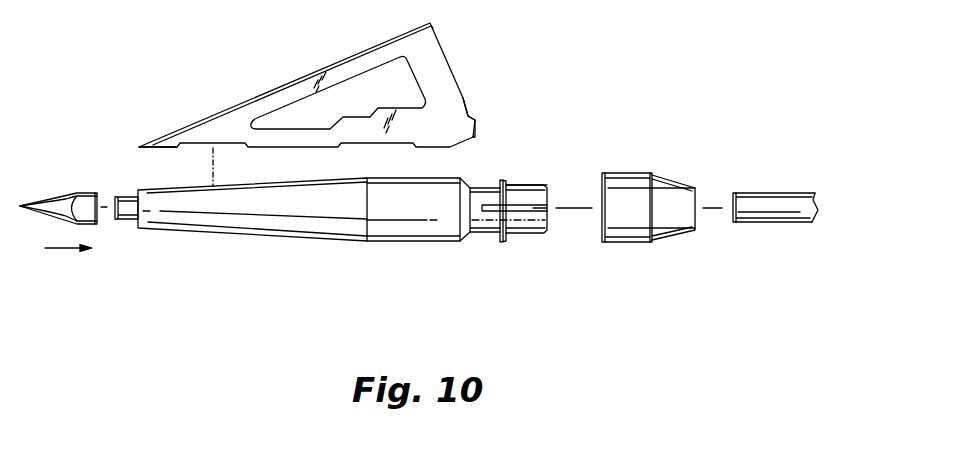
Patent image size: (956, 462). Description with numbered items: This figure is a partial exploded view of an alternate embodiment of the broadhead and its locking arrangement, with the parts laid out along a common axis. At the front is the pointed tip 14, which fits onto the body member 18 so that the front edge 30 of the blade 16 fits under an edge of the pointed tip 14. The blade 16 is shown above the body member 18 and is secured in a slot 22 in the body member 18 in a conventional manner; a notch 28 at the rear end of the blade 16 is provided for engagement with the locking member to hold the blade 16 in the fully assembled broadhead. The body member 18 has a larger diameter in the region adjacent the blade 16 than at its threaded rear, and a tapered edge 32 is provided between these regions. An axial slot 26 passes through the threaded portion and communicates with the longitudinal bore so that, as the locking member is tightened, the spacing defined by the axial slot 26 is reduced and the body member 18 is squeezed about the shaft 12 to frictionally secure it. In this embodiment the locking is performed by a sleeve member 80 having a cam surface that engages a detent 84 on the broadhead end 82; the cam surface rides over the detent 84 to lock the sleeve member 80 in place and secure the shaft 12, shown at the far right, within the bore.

The shaft 12 is at (753, 200).
The pointed tip 14 is at (75, 192).
The blade 16 is at (347, 67).
The body member 18 is at (245, 237).
The slot 22 is at (408, 240).
The axial slot 26 is at (533, 243).
The notch 28 is at (477, 121).
The front edge 30 is at (140, 146).
The tapered edge 32 is at (470, 186).
The sleeve member 80 is at (645, 175).
The broadhead end 82 is at (523, 187).
The detent 84 is at (503, 243).